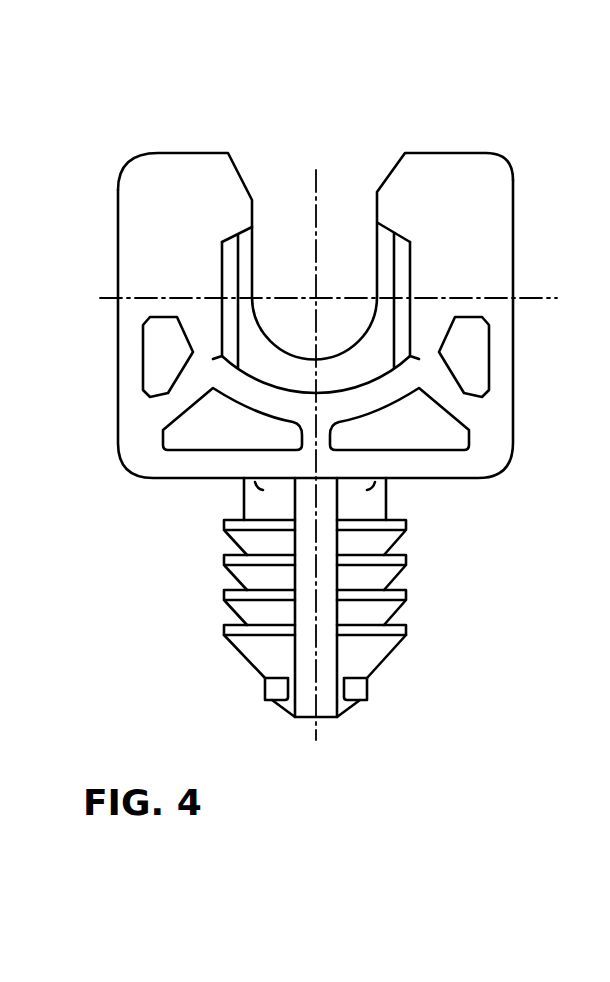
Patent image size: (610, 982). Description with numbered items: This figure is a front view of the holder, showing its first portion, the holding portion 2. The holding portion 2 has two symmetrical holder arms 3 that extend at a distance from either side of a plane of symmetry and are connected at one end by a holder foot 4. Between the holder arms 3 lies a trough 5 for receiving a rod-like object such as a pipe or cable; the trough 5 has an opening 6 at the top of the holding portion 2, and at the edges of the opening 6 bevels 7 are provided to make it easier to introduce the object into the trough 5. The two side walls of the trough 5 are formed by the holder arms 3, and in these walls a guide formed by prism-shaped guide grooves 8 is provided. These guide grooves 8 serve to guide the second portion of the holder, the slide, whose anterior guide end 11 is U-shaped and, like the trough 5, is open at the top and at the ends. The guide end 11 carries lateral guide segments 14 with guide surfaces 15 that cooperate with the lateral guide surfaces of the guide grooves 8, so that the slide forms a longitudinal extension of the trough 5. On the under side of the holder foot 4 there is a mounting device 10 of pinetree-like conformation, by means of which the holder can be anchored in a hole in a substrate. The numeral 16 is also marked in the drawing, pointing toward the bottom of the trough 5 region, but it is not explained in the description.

The holding portion 2 is at (496, 470).
The holder arms 3 is at (168, 157).
The holder foot 4 is at (356, 462).
The trough 5 is at (290, 378).
The opening 6 is at (268, 212).
The bevels 7 is at (237, 164).
The guide grooves 8 is at (220, 280).
The mounting device 10 is at (388, 657).
The guide end 11 is at (342, 371).
The guide segments 14 is at (236, 236).
The guide surfaces 15 is at (381, 225).
The bottom of the slot 16 is at (304, 390).